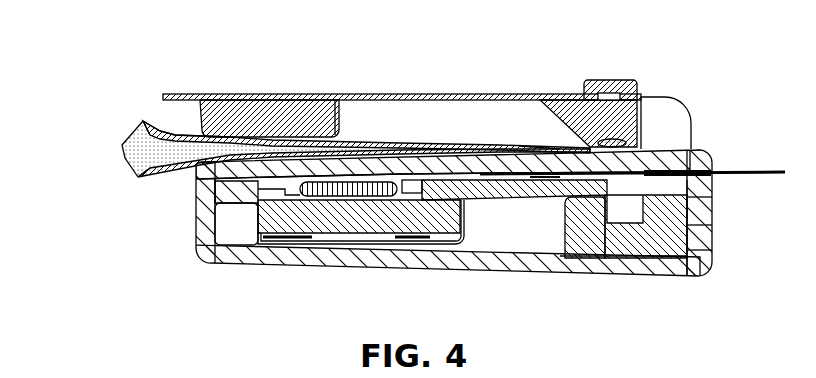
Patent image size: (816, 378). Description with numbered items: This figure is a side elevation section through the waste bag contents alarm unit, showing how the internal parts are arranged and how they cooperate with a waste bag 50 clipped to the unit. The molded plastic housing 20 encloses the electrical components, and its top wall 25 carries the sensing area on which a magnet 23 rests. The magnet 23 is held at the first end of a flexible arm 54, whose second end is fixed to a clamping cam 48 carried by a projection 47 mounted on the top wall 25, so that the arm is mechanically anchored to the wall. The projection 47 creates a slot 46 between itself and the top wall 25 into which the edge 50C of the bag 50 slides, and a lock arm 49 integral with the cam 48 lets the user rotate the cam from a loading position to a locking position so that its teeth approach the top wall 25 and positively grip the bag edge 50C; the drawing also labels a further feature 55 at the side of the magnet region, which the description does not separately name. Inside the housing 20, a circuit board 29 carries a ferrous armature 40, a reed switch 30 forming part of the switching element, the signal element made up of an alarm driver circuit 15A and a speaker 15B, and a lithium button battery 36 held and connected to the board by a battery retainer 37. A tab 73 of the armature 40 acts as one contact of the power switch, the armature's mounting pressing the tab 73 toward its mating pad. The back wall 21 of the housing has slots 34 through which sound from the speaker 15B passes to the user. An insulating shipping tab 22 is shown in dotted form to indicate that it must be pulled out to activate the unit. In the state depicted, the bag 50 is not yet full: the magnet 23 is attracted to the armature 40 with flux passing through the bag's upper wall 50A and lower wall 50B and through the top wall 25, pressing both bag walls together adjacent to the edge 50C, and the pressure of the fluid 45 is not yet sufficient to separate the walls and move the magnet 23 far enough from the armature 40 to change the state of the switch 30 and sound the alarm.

The alarm driver circuit 15A is at (584, 178).
The speaker 15B is at (584, 233).
The housing 20 is at (671, 270).
The back wall 21 is at (699, 213).
The insulating shipping tab 22 is at (709, 173).
The magnet 23 is at (270, 115).
The top wall 25 is at (213, 135).
The circuit board 29 is at (499, 192).
The reed switch 30 is at (348, 185).
The slots 34 is at (699, 252).
The battery 36 is at (380, 217).
The battery retainer 37 is at (255, 245).
The ferrous armature 40 is at (240, 178).
The fluid 45 is at (135, 149).
The slots 46 is at (582, 146).
The projections 47 is at (674, 123).
The clamping cam 48 is at (612, 135).
The lock arm 49 is at (545, 106).
The waste bag 50 is at (104, 159).
The upper wall 50A is at (143, 132).
The lower wall 50B is at (140, 170).
The edge 50C is at (539, 143).
The flexible arm 54 is at (437, 97).
The pin 55 is at (334, 116).
The tab 73 is at (542, 178).